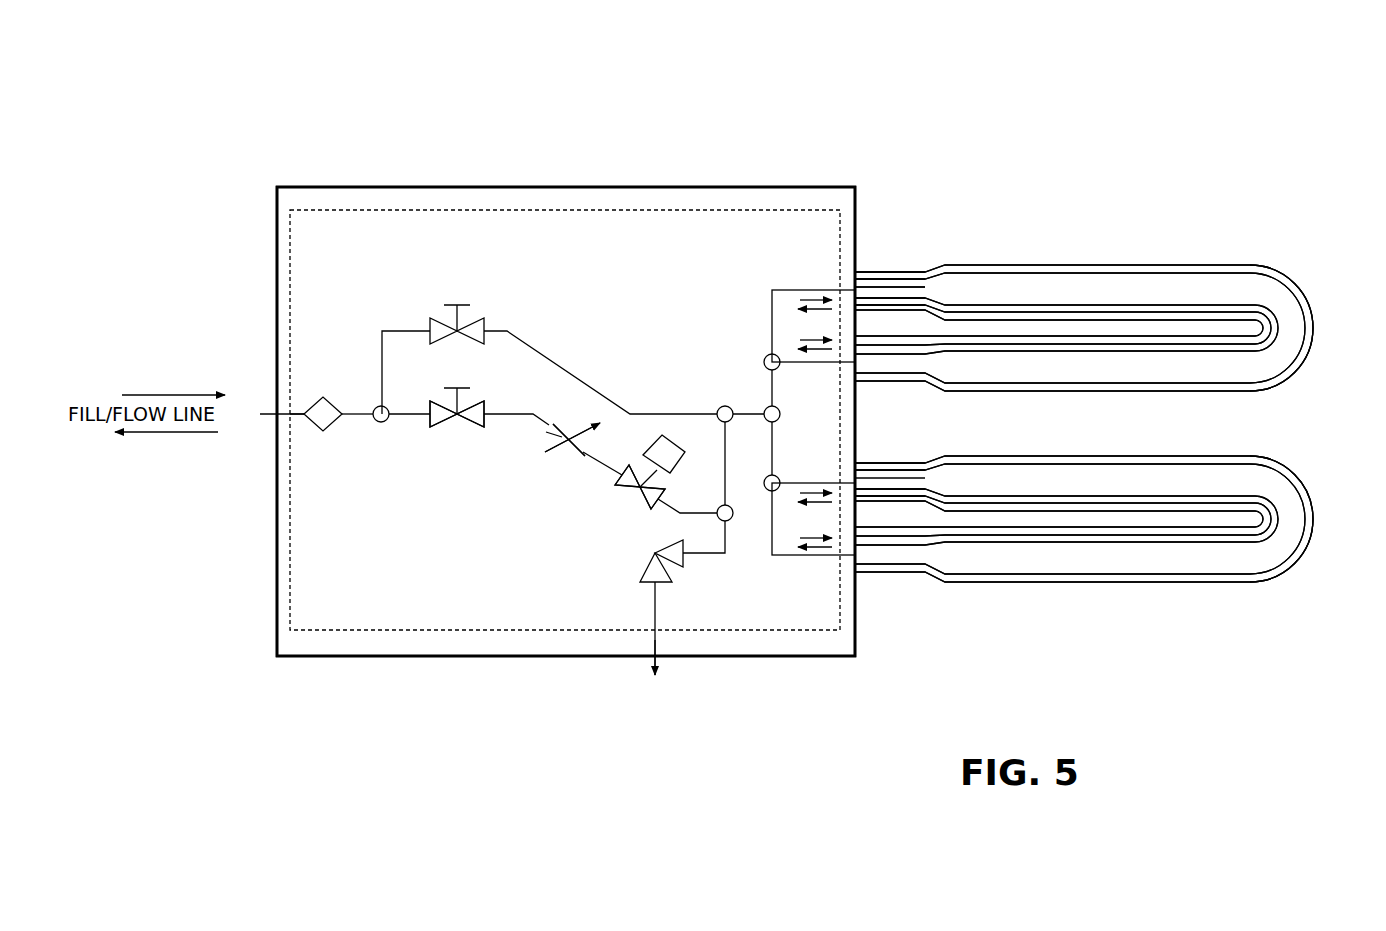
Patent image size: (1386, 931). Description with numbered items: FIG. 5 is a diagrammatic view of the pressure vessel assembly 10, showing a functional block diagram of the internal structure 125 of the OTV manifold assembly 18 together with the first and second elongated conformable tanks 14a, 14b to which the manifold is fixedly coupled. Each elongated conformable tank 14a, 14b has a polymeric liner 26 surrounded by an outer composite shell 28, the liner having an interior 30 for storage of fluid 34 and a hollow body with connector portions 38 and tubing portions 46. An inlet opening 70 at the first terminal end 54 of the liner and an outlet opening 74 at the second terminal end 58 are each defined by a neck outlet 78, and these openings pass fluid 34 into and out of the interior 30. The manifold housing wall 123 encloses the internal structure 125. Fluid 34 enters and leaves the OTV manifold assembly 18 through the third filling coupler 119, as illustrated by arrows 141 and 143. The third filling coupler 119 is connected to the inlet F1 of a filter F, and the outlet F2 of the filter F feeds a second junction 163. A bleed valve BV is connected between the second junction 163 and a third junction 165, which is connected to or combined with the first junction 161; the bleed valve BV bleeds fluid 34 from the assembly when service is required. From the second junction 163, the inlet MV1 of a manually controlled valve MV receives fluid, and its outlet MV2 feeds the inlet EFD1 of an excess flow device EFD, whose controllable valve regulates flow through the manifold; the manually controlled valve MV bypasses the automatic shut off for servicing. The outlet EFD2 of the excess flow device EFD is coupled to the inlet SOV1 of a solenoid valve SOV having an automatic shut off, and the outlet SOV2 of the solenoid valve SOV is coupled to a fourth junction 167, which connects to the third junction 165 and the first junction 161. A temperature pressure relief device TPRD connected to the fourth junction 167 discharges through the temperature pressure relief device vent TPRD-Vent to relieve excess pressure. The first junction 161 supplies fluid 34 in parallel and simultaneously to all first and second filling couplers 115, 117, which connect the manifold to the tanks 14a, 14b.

The pressure vessel assembly 10 is at (431, 166).
The OTV manifold assembly 18 is at (629, 182).
The housing wall 123 is at (704, 185).
The internal structure 125 is at (540, 208).
The arrow 141 is at (167, 393).
The arrow 143 is at (170, 434).
The third filling coupler 119 is at (262, 417).
The second junction 163 is at (380, 424).
The third junction 165 is at (722, 406).
The first junction 161 is at (769, 405).
The fourth junction 167 is at (728, 521).
The first filling coupler 115 is at (815, 290).
The second filling coupler 117 is at (815, 364).
The elongated conformable tank 14a is at (1314, 295).
The elongated conformable tank 14b is at (1319, 528).
The polymeric liner 26 is at (1066, 376).
The outer composite shell 28 is at (1084, 408).
The interior 30 is at (1066, 426).
The fluid 34 is at (1122, 372).
The connector portion 38 is at (1314, 333).
The tubing portion 46 is at (1047, 385).
The inlet opening 70 is at (934, 376).
The first terminal end 54 is at (862, 270).
The neck outlet 78 is at (895, 272).
The outlet opening 74 is at (934, 426).
The second terminal end 58 is at (915, 298).
The filter F is at (338, 400).
The inlet F1 is at (300, 402).
The outlet F2 is at (358, 406).
The manually controlled valve MV is at (453, 430).
The inlet MV1 is at (421, 400).
The outlet MV2 is at (493, 400).
The bleed valve BV is at (432, 322).
The excess flow device EFD is at (578, 452).
The inlet EFD1 is at (546, 425).
The outlet EFD2 is at (600, 447).
The solenoid valve SOV is at (623, 490).
The inlet SOV1 is at (610, 470).
The outlet SOV2 is at (665, 505).
The temperature pressure relief device TPRD is at (655, 553).
The temperature pressure relief device vent TPRD-Vent is at (657, 642).